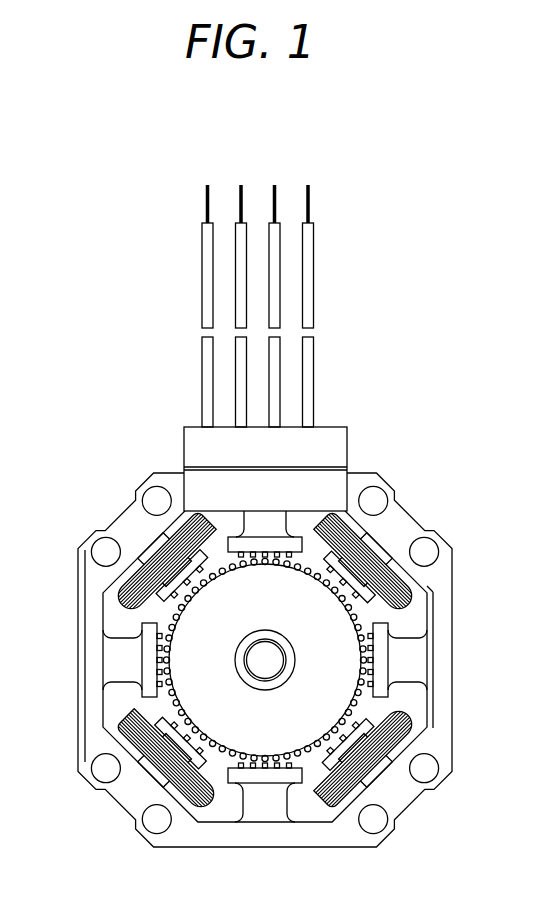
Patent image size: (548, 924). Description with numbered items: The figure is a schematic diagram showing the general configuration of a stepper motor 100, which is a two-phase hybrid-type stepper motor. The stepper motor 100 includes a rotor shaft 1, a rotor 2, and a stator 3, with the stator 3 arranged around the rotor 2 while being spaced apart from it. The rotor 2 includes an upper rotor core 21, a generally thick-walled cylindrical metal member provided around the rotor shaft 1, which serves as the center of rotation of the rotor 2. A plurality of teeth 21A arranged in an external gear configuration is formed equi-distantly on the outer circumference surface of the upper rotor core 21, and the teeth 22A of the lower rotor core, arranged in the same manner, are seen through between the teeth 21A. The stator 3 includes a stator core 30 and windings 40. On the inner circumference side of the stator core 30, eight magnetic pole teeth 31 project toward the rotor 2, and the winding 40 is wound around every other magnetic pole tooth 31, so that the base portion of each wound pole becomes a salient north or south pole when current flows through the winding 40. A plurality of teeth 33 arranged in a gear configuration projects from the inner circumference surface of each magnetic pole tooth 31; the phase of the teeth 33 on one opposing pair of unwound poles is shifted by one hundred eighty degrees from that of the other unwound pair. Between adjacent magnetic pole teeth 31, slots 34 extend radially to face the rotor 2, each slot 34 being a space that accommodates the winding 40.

The stepper motor 100 is at (284, 154).
The rotor shaft 1 is at (272, 672).
The rotor 2 is at (335, 712).
The upper rotor core 21 is at (342, 690).
The teeth 21A is at (318, 760).
The teeth 22A is at (308, 756).
The stator 3 is at (118, 510).
The stator core 30 is at (92, 577).
The magnetic pole teeth 31 is at (418, 658).
The teeth 33 is at (308, 560).
The slots 34 is at (113, 609).
The windings 40 is at (372, 557).